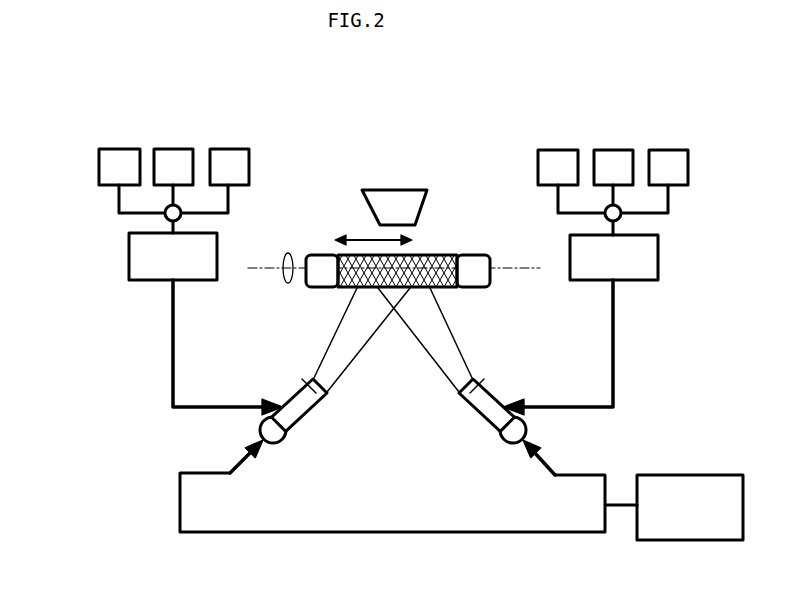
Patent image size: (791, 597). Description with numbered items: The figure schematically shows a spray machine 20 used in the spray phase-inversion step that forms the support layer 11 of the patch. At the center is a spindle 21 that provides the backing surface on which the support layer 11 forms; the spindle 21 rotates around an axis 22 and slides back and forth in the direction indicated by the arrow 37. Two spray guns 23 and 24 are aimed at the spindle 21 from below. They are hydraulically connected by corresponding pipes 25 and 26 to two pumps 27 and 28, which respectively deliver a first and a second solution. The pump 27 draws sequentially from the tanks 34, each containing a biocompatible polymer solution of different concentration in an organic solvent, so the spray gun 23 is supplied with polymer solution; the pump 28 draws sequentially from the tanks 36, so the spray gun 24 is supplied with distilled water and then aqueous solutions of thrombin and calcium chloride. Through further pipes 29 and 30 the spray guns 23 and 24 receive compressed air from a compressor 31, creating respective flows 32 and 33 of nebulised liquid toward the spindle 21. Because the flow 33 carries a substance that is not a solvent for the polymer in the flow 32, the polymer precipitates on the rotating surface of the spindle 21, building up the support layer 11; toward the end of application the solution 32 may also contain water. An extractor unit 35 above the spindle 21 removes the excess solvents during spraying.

The spray machine 20 is at (292, 120).
The support layer 11 is at (423, 252).
The spindle 21 is at (318, 265).
The axis 22 is at (513, 268).
The spray gun 23 is at (482, 420).
The spray gun 24 is at (300, 420).
The pipe 25 is at (617, 370).
The pipe 26 is at (172, 370).
The pump 27 is at (660, 260).
The pump 28 is at (128, 262).
The further pipe 29 is at (560, 472).
The further pipe 30 is at (220, 473).
The compressor 31 is at (690, 475).
The flow of nebulised liquid 32 is at (458, 345).
The flow of nebulised liquid 33 is at (332, 345).
The tanks 34 is at (668, 155).
The extractor unit 35 is at (397, 192).
The tanks 36 is at (232, 153).
The arrow 37 is at (347, 233).